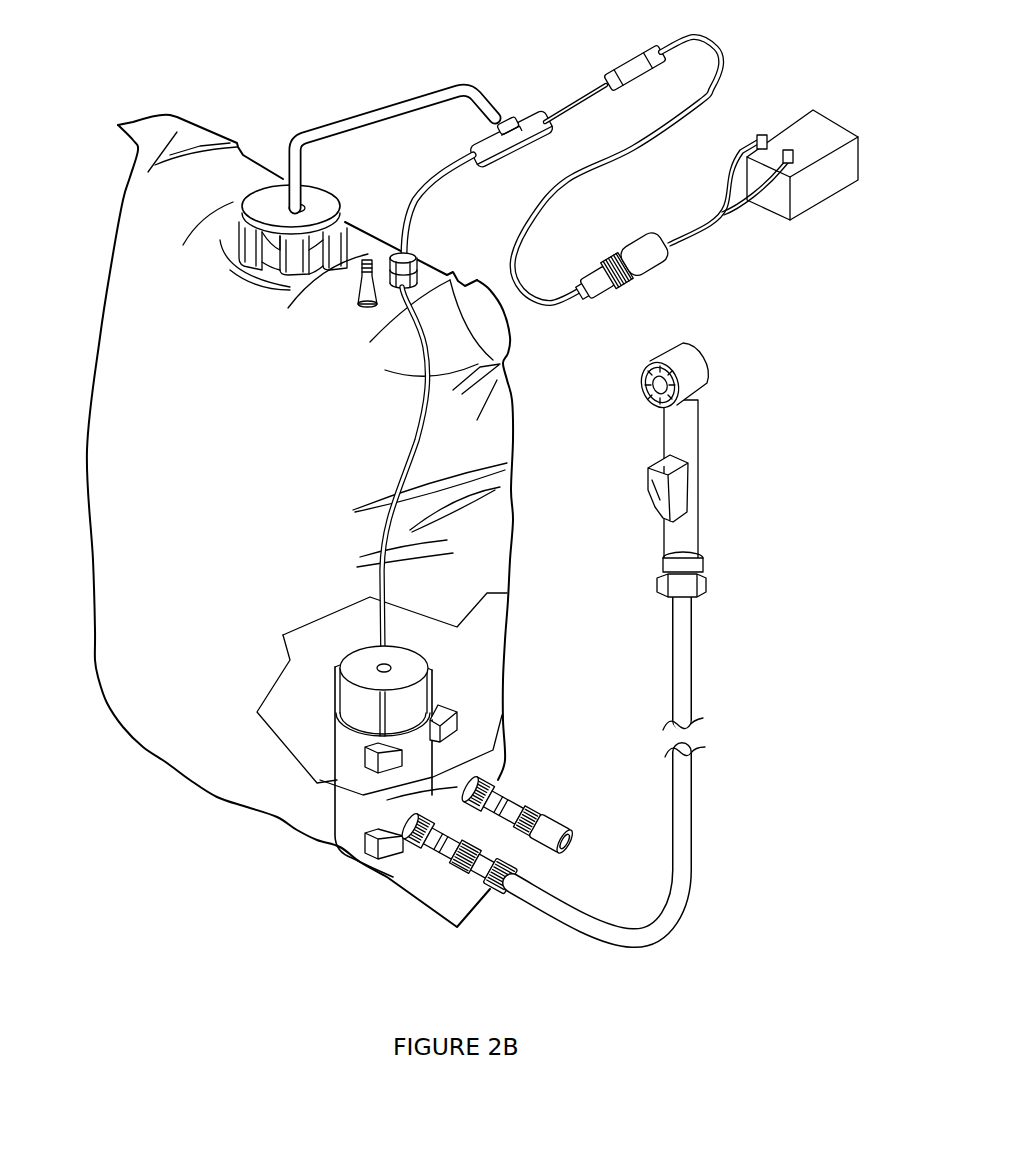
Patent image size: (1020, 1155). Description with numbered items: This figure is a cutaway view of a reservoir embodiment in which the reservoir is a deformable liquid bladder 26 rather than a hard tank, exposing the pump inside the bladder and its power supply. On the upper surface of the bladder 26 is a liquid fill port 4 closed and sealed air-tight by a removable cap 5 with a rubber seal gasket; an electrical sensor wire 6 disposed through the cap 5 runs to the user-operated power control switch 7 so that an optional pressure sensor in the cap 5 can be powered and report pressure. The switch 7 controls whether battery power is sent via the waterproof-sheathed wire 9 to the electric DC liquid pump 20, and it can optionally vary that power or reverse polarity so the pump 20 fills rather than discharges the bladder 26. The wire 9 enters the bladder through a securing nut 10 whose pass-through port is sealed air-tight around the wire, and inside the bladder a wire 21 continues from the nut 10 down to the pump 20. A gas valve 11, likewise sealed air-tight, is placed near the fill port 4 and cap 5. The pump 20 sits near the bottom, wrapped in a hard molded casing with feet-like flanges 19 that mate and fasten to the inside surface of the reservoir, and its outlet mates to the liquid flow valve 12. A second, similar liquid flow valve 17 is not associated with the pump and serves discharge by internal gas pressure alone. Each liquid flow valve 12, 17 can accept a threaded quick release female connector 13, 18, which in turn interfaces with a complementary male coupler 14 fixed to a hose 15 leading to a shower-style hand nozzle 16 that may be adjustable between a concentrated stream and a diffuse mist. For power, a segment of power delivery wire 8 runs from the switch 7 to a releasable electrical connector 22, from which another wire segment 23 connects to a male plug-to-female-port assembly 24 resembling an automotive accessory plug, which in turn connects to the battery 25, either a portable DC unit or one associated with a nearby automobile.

The liquid fill port 4 is at (268, 266).
The cap 5 is at (279, 206).
The electrical sensor wire 6 is at (362, 117).
The power control switch 7 is at (517, 152).
The power delivery wire 8 is at (578, 98).
The wire 9 is at (432, 188).
The securing nut 10 is at (418, 265).
The gas valve 11 is at (362, 308).
The liquid flow valve 12 is at (413, 849).
The quick release female connector 13 is at (457, 870).
The male coupler 14 is at (500, 893).
The hose 15 is at (697, 825).
The shower-style hand nozzle 16 is at (699, 442).
The liquid flow valve 17 is at (493, 778).
The quick release female connector 18 is at (553, 813).
The feet-like flanges 19 is at (447, 710).
The electric DC liquid pump 20 is at (405, 645).
The wire 21 is at (403, 460).
The releasable electrical connector 22 is at (616, 62).
The wire segment 23 is at (723, 72).
The male plug-to-female-port assembly 24 is at (612, 292).
The battery 25 is at (823, 186).
The deformable liquid bladder 26 is at (123, 122).